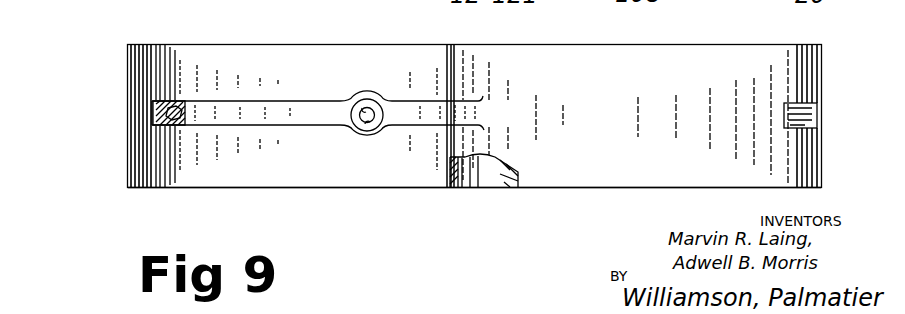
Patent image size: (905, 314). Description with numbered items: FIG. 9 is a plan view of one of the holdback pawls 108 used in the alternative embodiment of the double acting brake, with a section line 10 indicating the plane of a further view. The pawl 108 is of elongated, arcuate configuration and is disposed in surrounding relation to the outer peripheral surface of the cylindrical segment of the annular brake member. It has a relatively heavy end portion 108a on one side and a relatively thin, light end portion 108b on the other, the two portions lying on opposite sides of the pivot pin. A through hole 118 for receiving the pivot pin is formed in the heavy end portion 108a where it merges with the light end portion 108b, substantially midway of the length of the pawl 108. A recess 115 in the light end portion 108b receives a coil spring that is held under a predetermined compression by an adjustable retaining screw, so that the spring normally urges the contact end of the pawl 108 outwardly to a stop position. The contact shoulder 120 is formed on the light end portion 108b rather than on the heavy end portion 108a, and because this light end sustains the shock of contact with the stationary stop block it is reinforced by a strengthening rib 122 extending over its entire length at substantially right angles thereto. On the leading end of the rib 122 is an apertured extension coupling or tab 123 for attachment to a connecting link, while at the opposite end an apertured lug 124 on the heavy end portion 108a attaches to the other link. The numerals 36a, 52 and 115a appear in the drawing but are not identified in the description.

The section line 10- 10 is at (250, 60).
The element 36a is at (575, 11).
The element 52 is at (687, 11).
The holdback pawl 108 is at (558, 189).
The heavy end portion 108a is at (608, 150).
The light end portion 108b is at (390, 76).
The recess 115 is at (372, 128).
The hole in boss 115a is at (363, 108).
The through hole 118 is at (487, 175).
The contact shoulder 120 is at (130, 163).
The strengthening rib 122 is at (315, 120).
The extension coupling or tab 123 is at (174, 104).
The apertured lug 124 is at (805, 116).